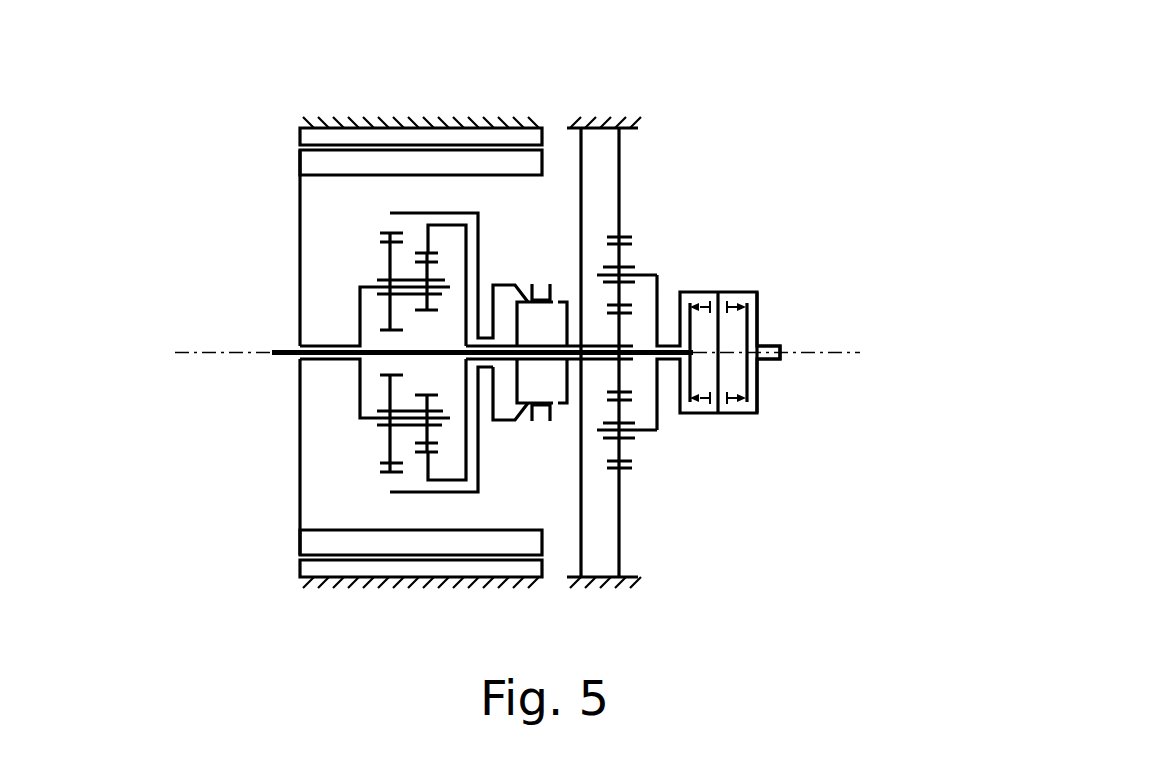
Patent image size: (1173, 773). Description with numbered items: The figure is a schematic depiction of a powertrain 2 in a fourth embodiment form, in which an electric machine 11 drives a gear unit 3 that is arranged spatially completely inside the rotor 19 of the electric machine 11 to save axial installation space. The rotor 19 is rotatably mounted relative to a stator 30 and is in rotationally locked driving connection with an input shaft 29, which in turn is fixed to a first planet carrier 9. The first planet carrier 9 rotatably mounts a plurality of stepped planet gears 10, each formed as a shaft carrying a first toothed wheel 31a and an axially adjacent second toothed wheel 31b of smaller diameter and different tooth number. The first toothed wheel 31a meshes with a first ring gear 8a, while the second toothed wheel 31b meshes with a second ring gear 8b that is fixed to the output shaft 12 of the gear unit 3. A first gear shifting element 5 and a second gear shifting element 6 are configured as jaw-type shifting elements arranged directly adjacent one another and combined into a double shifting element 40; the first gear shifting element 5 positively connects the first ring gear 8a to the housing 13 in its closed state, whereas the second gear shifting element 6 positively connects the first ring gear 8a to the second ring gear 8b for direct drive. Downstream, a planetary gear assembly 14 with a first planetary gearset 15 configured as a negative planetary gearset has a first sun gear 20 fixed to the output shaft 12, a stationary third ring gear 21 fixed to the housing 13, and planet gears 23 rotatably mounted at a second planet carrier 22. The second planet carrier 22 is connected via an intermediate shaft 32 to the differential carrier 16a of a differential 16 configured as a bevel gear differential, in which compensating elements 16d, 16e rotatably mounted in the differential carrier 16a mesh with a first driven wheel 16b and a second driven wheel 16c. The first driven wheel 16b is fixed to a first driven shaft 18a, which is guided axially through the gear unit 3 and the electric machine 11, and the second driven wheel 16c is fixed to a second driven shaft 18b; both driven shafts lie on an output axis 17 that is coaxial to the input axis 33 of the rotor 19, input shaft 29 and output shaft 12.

The powertrain 2 is at (260, 102).
The gear unit 3 is at (334, 481).
The first gear shifting element 5 is at (550, 434).
The second gear shifting element 6 is at (524, 434).
The first ring gear 8a is at (387, 474).
The second ring gear 8b is at (419, 454).
The first planet carrier 9 is at (367, 422).
The stepped planet gear 10 is at (471, 250).
The electric machine 11 is at (274, 601).
The output shaft 12 is at (597, 340).
The housing 13 is at (358, 117).
The planetary gear assembly 14 is at (634, 200).
The first planetary gearset 15 is at (641, 213).
The differential 16 is at (783, 430).
The differential carrier 16a is at (737, 300).
The first driven wheel 16b is at (686, 385).
The second driven wheel 16c is at (770, 332).
The compensating element 16d is at (740, 312).
The compensating element 16e is at (758, 417).
The output axis 17 is at (213, 356).
The first driven shaft 18a is at (283, 349).
The second driven shaft 18b is at (787, 355).
The rotor 19 is at (312, 165).
The first sun gear 20 is at (630, 318).
The third ring gear 21 is at (632, 472).
The second planet carrier 22 is at (657, 423).
The planet gear 23 is at (623, 447).
The input shaft 29 is at (322, 345).
The stator 30 is at (298, 138).
The first toothed wheel 31a is at (385, 248).
The second toothed wheel 31b is at (438, 266).
The intermediate shaft 32 is at (703, 291).
The input axis 33 is at (517, 396).
The double shifting element 40 is at (537, 273).